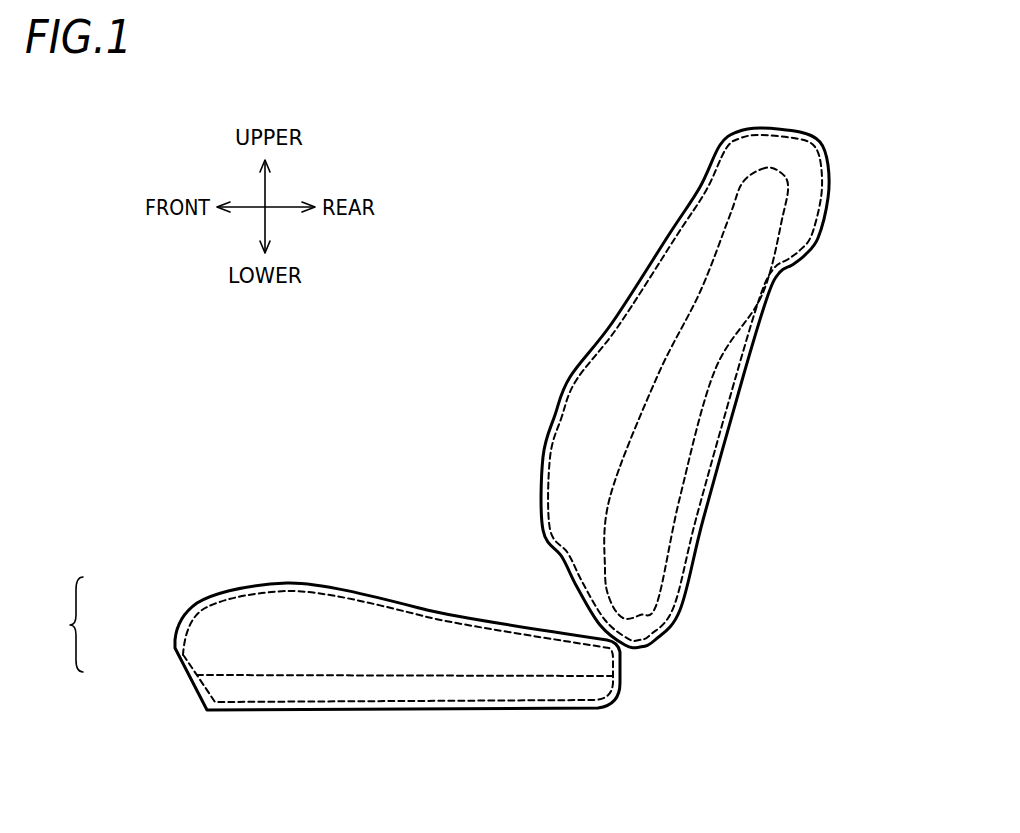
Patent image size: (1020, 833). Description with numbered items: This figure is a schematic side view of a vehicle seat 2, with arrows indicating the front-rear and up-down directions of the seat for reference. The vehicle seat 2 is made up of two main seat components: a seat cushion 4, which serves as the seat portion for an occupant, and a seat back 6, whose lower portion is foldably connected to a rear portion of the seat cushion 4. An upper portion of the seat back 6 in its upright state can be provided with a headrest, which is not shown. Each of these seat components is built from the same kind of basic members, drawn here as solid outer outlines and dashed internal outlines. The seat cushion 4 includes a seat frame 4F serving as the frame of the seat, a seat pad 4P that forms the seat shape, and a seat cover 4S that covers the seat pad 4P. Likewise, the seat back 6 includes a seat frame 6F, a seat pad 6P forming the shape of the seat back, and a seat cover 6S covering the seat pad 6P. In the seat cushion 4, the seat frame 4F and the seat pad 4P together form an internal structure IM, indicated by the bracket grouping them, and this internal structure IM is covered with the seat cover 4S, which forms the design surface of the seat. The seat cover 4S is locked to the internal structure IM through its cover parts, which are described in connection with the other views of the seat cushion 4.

The vehicle seat 2 is at (848, 163).
The seat cushion 4 is at (327, 580).
The seat cover 4S is at (253, 585).
The seat pad 4P is at (193, 605).
The seat frame 4F is at (210, 697).
The seat back 6 is at (583, 323).
The seat cover 6S is at (555, 415).
The seat pad 6P is at (548, 455).
The seat frame 6F is at (607, 507).
The internal structure IM is at (58, 624).